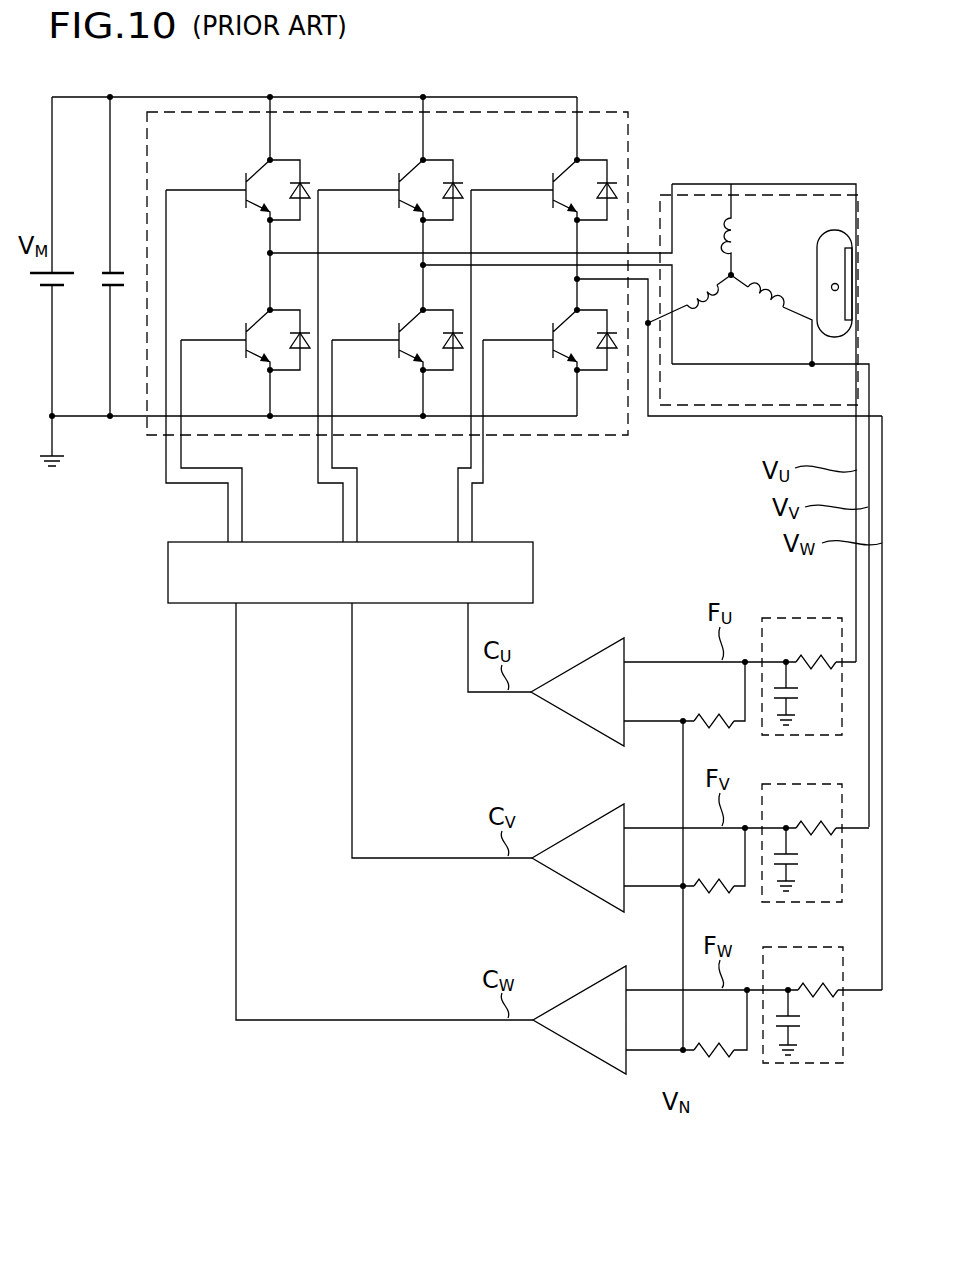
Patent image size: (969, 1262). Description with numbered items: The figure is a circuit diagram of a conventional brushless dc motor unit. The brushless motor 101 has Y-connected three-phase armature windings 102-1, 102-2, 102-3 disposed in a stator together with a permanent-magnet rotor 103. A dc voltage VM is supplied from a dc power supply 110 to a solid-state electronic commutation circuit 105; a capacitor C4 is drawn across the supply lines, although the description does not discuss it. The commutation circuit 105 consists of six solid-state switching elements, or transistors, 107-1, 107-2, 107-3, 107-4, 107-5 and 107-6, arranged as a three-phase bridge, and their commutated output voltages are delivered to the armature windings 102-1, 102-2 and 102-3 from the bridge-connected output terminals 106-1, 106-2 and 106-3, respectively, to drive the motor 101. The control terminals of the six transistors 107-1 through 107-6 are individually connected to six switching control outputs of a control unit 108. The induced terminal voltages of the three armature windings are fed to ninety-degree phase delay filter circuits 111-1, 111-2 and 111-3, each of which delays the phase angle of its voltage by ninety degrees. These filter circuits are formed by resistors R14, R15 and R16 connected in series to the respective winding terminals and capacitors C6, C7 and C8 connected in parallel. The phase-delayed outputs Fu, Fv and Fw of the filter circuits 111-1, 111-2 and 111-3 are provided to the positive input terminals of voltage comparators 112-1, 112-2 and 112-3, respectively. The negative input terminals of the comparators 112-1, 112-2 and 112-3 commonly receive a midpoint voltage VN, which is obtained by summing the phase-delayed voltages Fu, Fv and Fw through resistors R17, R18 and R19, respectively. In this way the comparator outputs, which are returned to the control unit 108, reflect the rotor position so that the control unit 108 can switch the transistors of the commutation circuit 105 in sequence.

The brushless motor 101 is at (828, 192).
The armature winding 102-1 is at (723, 222).
The armature winding 102-2 is at (767, 318).
The armature winding 102-3 is at (713, 307).
The permanent-magnet rotor 103 is at (820, 282).
The commutation circuit 105 is at (628, 112).
The output terminal 106-1 is at (267, 258).
The output terminal 106-2 is at (419, 270).
The output terminal 106-3 is at (575, 282).
The switching element 107-1 is at (243, 200).
The switching element 107-2 is at (396, 200).
The switching element 107-3 is at (550, 200).
The switching element 107-4 is at (246, 350).
The switching element 107-5 is at (399, 350).
The switching element 107-6 is at (553, 350).
The control unit 108 is at (535, 572).
The dc power supply 110 is at (32, 282).
The phase delay filter circuit 111-1 is at (814, 695).
The phase delay filter circuit 111-2 is at (814, 861).
The phase delay filter circuit 111-3 is at (814, 1025).
The voltage comparator 112-1 is at (570, 668).
The voltage comparator 112-2 is at (570, 834).
The voltage comparator 112-3 is at (570, 996).
The smoothing capacitor C4 is at (98, 262).
The capacitor C6 is at (804, 693).
The capacitor C7 is at (804, 859).
The capacitor C8 is at (805, 1022).
The resistor R14 is at (815, 647).
The resistor R15 is at (813, 813).
The resistor R16 is at (814, 975).
The resistor R17 is at (713, 706).
The resistor R18 is at (715, 872).
The resistor R19 is at (718, 1037).